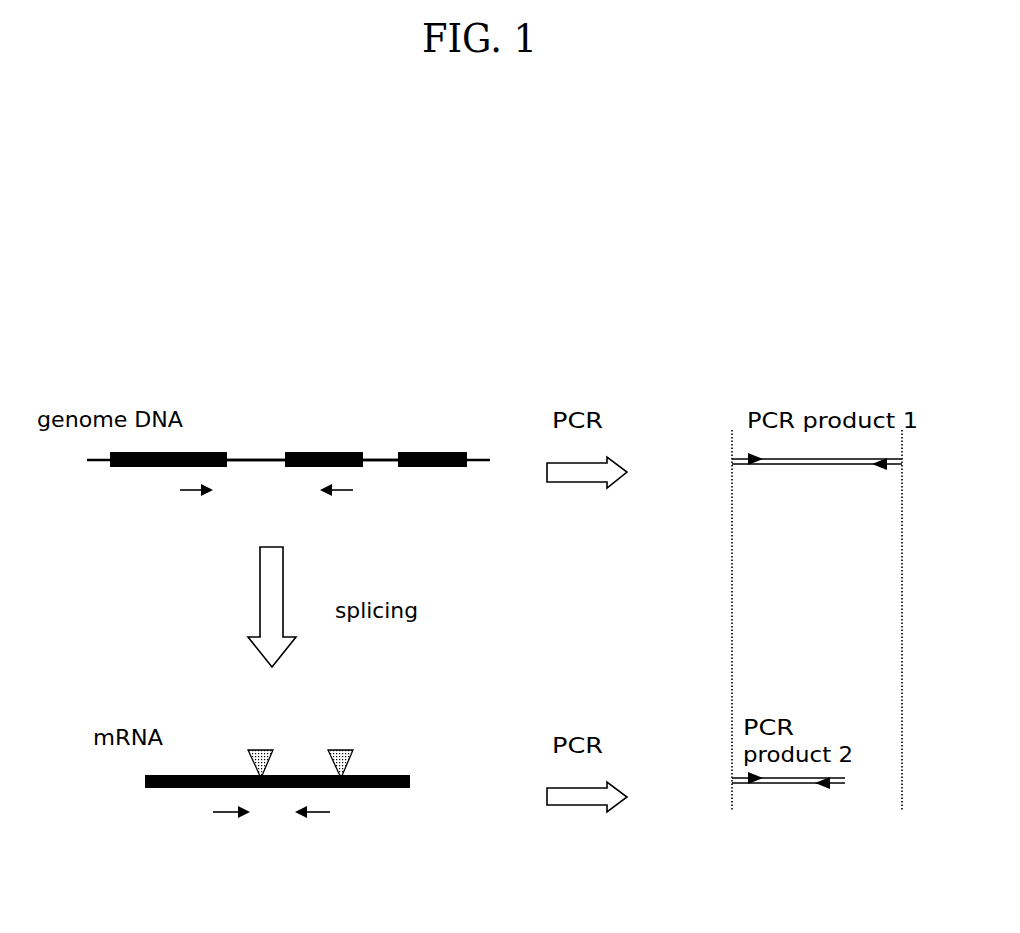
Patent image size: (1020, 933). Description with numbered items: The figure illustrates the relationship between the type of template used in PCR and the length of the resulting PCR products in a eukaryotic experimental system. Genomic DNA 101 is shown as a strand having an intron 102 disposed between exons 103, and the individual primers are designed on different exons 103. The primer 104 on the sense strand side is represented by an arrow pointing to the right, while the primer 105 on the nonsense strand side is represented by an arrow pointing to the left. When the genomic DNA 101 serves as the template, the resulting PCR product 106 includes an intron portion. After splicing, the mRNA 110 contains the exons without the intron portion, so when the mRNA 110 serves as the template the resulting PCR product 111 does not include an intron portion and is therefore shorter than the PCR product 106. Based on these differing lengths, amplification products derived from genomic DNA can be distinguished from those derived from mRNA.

The genomic DNA 101 is at (202, 441).
The intron 102 is at (253, 457).
The exon 103 is at (322, 455).
The primer 104 is at (187, 490).
The primer 105 is at (348, 490).
The PCR product 106 is at (815, 465).
The mRNA 110 is at (385, 775).
The PCR product 111 is at (788, 785).